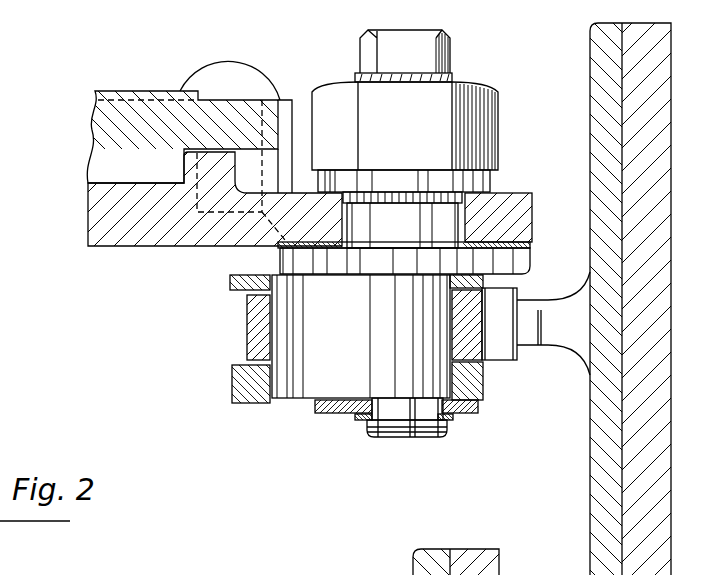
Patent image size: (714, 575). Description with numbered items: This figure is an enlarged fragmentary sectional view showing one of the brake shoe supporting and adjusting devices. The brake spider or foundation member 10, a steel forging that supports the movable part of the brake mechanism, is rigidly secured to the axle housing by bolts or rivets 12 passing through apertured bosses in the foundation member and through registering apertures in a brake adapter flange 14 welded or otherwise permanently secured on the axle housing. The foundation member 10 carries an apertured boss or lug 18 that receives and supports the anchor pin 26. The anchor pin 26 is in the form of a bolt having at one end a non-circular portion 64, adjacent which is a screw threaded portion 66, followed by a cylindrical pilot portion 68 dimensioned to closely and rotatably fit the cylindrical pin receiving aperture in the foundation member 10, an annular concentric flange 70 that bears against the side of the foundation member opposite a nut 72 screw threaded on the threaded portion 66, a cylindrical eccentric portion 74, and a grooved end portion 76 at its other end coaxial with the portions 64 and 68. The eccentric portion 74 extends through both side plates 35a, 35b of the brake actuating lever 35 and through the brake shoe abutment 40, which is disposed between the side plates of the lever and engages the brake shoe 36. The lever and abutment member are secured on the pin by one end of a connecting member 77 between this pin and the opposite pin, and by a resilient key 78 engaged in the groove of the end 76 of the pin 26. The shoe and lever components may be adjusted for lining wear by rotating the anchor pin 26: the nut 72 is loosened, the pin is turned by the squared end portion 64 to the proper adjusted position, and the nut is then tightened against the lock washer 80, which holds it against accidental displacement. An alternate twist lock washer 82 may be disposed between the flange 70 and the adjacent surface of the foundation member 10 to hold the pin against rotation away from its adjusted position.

The brake spider or foundation member 10 is at (200, 249).
The bolts or rivets 12 is at (264, 71).
The brake adapter flange 14 is at (150, 91).
The apertured boss or lug 18 is at (529, 197).
The anchor pin 26 is at (413, 436).
The brake actuating lever 35 is at (319, 360).
The side plate 35a is at (232, 386).
The side plate 35b is at (230, 283).
The brake shoe 36 is at (589, 476).
The abutment member 40 is at (246, 330).
The non-circular portion 64 is at (428, 48).
The screw threaded portion 66 is at (450, 76).
The cylindrical pilot portion 68 is at (381, 216).
The annular concentric flange 70 is at (531, 265).
The nut 72 is at (490, 108).
The cylindrical eccentric portion 74 is at (300, 385).
The grooved end portion 76 is at (438, 438).
The connecting member 77 is at (480, 412).
The resilient key 78 is at (360, 421).
The lock washer 80 is at (494, 184).
The alternate twist lock washer 82 is at (533, 246).